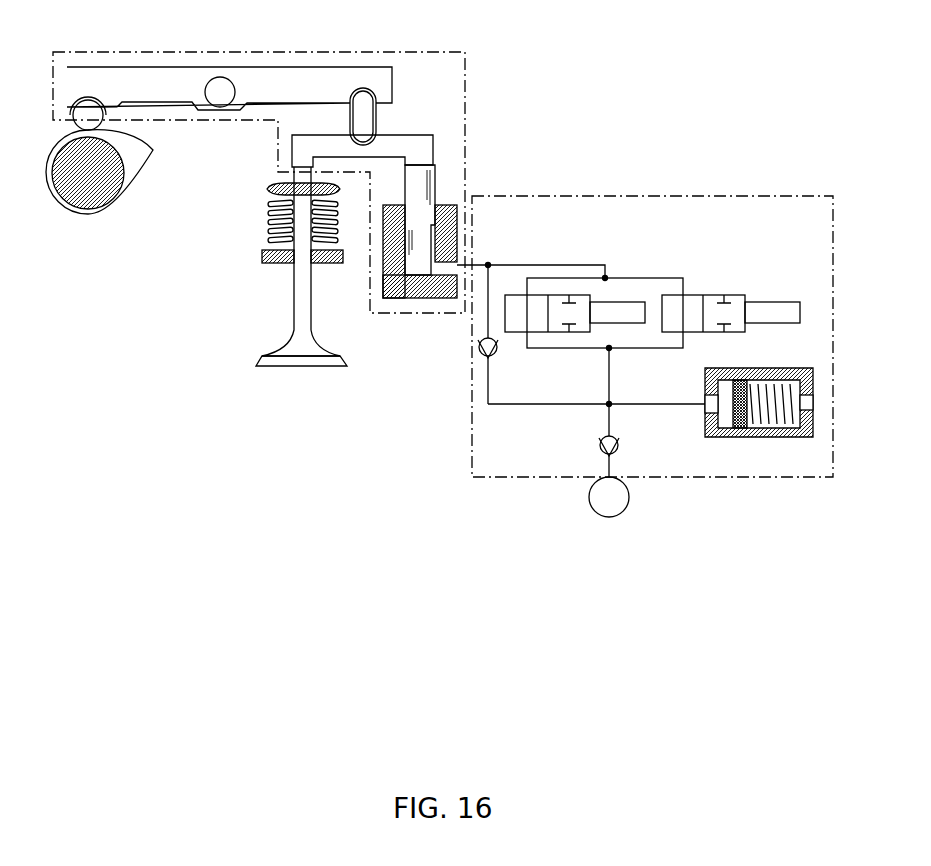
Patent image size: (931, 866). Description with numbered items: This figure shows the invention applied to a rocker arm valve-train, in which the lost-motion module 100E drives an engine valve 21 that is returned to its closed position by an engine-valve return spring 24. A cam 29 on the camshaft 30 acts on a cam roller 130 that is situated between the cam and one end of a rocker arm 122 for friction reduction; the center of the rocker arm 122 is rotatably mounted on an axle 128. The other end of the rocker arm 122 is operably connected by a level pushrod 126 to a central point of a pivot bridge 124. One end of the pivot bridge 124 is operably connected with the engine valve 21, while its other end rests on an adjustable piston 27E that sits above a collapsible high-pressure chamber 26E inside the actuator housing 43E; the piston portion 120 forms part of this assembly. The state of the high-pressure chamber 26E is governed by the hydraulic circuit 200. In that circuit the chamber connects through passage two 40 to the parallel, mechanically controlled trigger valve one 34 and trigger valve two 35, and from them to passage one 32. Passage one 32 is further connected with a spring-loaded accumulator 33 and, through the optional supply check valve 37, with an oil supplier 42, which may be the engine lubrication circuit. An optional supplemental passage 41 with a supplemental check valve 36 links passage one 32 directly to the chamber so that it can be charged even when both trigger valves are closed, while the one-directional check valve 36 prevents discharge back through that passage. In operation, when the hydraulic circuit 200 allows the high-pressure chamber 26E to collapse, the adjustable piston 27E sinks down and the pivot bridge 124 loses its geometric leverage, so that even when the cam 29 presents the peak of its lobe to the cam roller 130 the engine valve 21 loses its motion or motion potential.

The lost-motion module 100E is at (471, 87).
The rocker arm 122 is at (290, 98).
The cam roller 130 is at (90, 113).
The axle 128 is at (222, 90).
The level pushrod 126 is at (362, 120).
The pivot bridge 124 is at (340, 153).
The actuating piston 120 is at (418, 152).
The adjustable piston 27E is at (440, 195).
The actuator housing 43E is at (393, 273).
The high-pressure chamber 26E is at (424, 258).
The engine valve 21 is at (300, 356).
The engine-valve return spring 24 is at (275, 222).
The cam 29 is at (137, 162).
The camshaft 30 is at (70, 163).
The hydraulic circuit 200 is at (709, 198).
The passage two 40 is at (510, 267).
The trigger valve one 34 is at (554, 291).
The trigger valve two 35 is at (699, 291).
The supplemental check valve 36 is at (497, 352).
The supplemental passage 41 is at (503, 407).
The passage one 32 is at (612, 382).
The supply check valve 37 is at (617, 452).
The oil supplier 42 is at (598, 506).
The accumulator 33 is at (754, 366).